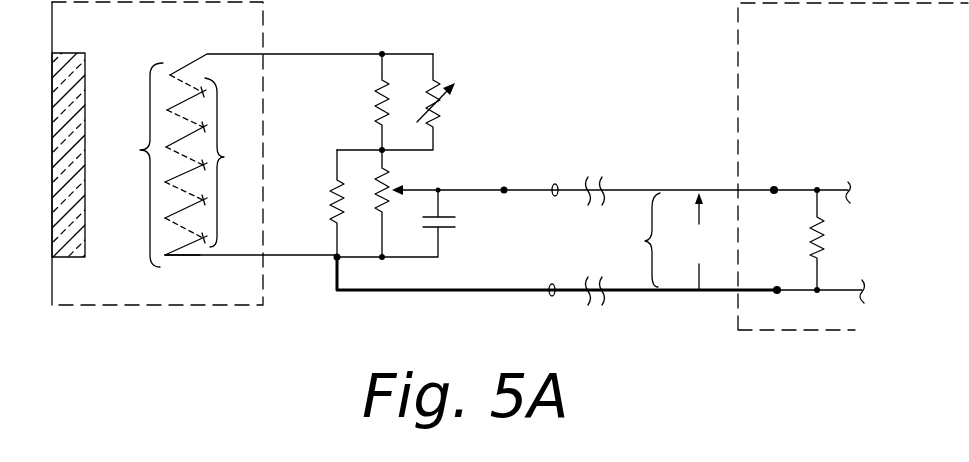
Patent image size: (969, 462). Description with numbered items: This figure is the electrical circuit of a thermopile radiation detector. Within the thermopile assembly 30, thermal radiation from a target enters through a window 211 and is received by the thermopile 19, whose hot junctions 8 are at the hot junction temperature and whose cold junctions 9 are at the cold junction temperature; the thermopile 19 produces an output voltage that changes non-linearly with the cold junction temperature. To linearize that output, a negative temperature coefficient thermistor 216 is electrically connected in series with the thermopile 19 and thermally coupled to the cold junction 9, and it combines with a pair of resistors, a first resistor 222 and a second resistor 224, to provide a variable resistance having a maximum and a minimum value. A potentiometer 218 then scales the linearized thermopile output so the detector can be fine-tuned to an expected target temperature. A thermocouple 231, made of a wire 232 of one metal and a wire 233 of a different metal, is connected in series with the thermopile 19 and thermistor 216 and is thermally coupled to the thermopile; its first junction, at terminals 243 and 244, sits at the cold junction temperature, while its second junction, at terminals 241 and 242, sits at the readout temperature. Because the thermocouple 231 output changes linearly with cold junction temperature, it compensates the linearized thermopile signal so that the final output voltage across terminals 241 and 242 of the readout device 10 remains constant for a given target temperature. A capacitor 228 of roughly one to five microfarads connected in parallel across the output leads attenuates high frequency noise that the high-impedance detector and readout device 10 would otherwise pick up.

The readout device 10 is at (737, 62).
The thermopile assembly 30 is at (222, 307).
The window 211 is at (73, 53).
The hot junctions 8 is at (277, 158).
The cold junctions 9 is at (225, 161).
The thermopile 19 is at (176, 272).
The resistor R1 222 is at (373, 108).
The NTC thermistor 216 is at (447, 105).
The resistor R2 224 is at (327, 207).
The potentiometer 218 is at (396, 180).
The capacitor 228 is at (457, 220).
The terminal 244 is at (333, 260).
The terminal 243 is at (505, 187).
The wire 233 is at (556, 184).
The wire 232 is at (553, 284).
The thermocouple 231 is at (656, 241).
The terminal 241 is at (772, 188).
The terminal 242 is at (777, 293).